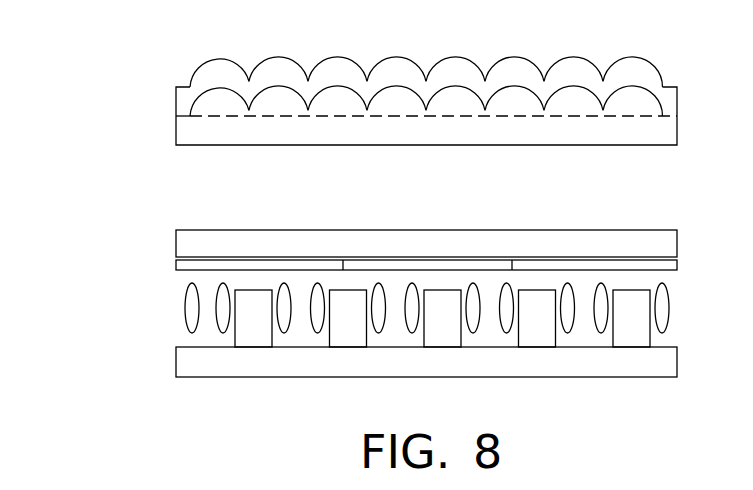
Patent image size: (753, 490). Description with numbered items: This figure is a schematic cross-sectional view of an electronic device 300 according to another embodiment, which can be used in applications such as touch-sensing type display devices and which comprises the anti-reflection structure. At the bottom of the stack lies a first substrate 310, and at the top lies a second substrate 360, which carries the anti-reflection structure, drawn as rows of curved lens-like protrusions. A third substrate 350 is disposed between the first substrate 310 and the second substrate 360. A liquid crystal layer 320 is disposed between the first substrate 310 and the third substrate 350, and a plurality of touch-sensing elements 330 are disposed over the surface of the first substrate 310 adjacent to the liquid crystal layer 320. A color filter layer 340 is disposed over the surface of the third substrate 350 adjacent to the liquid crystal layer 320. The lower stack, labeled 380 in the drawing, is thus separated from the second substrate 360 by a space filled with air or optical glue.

The electronic device 300 is at (86, 41).
The first substrate 310 is at (184, 360).
The liquid crystal layer 320 is at (200, 316).
The touch-sensing elements 330 is at (245, 304).
The color filter layer 340 is at (182, 265).
The third substrate 350 is at (182, 247).
The second substrate 360 is at (184, 129).
The light source module 380 is at (452, 203).